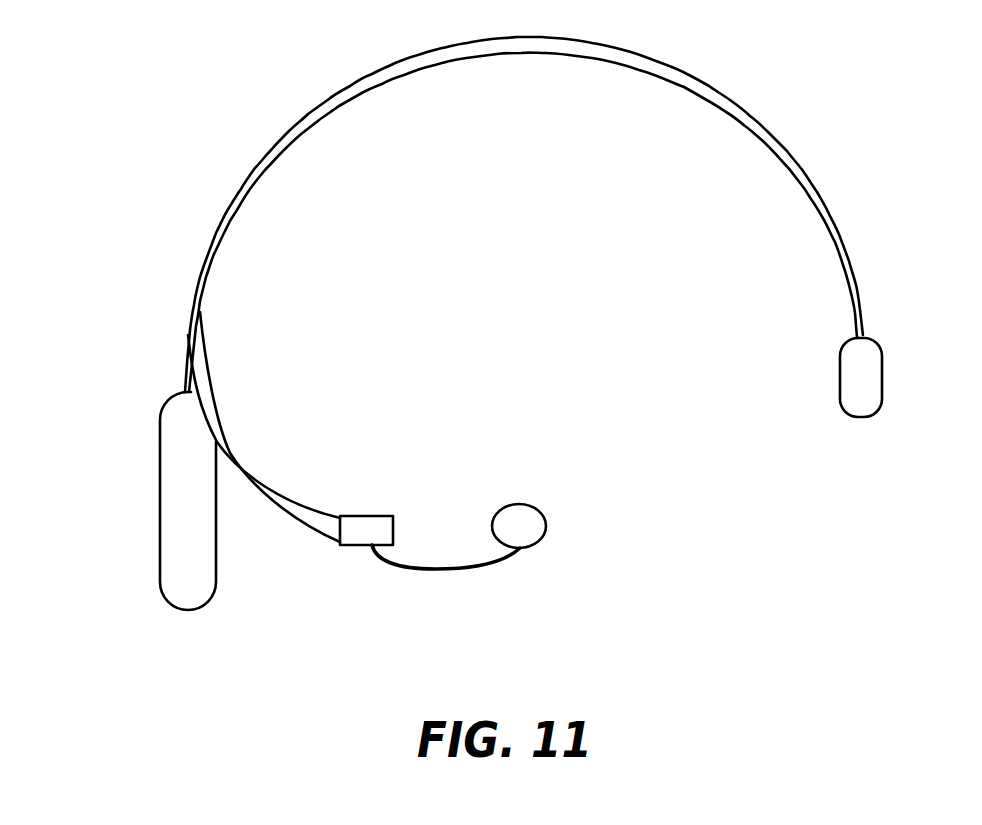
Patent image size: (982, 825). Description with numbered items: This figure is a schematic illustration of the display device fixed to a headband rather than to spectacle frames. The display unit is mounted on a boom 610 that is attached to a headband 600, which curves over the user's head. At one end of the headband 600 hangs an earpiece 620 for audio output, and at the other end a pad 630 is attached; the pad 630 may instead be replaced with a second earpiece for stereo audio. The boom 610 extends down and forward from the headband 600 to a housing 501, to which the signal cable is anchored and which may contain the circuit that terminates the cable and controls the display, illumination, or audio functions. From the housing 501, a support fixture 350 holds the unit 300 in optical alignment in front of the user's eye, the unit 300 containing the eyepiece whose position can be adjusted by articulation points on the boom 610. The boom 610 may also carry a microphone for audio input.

The headband 600 is at (326, 102).
The boom 610 is at (213, 423).
The earpiece 620 is at (170, 490).
The pad 630 is at (857, 375).
The housing 501 is at (372, 515).
The unit 300 is at (510, 503).
The support fixture 350 is at (432, 570).